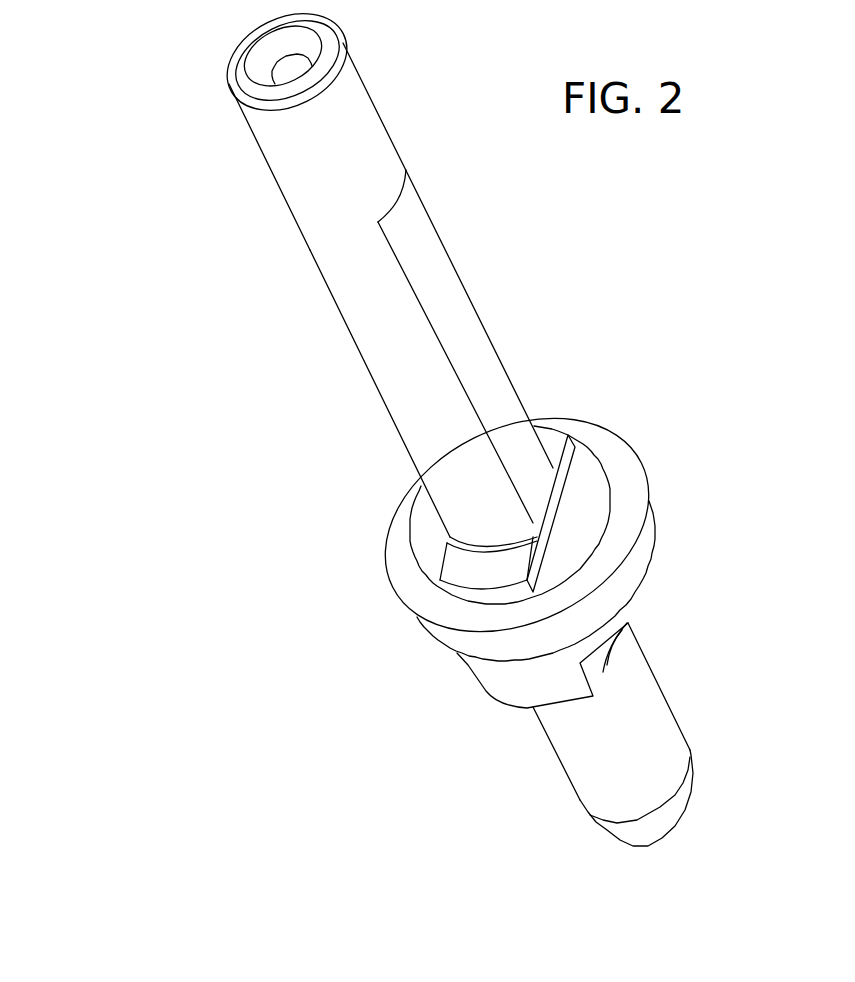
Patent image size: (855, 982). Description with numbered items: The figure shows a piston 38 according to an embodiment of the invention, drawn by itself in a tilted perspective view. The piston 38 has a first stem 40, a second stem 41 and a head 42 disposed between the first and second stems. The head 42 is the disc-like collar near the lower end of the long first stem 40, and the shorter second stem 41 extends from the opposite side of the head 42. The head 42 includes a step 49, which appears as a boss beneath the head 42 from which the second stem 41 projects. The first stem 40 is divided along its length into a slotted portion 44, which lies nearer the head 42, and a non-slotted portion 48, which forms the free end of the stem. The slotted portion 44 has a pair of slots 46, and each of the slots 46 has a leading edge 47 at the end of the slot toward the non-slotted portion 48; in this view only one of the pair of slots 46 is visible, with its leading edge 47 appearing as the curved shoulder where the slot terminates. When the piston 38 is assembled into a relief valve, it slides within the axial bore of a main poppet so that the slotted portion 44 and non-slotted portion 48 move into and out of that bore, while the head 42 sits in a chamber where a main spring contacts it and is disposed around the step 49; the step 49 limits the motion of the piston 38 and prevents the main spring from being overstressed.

The piston 38 is at (118, 390).
The first stem 40 is at (404, 119).
The second stem 41 is at (674, 693).
The head 42 is at (643, 451).
The slotted portion 44 is at (341, 393).
The slots 46 is at (450, 282).
The leading edge 47 is at (397, 203).
The non-slotted portion 48 is at (216, 165).
The step 49 is at (533, 680).